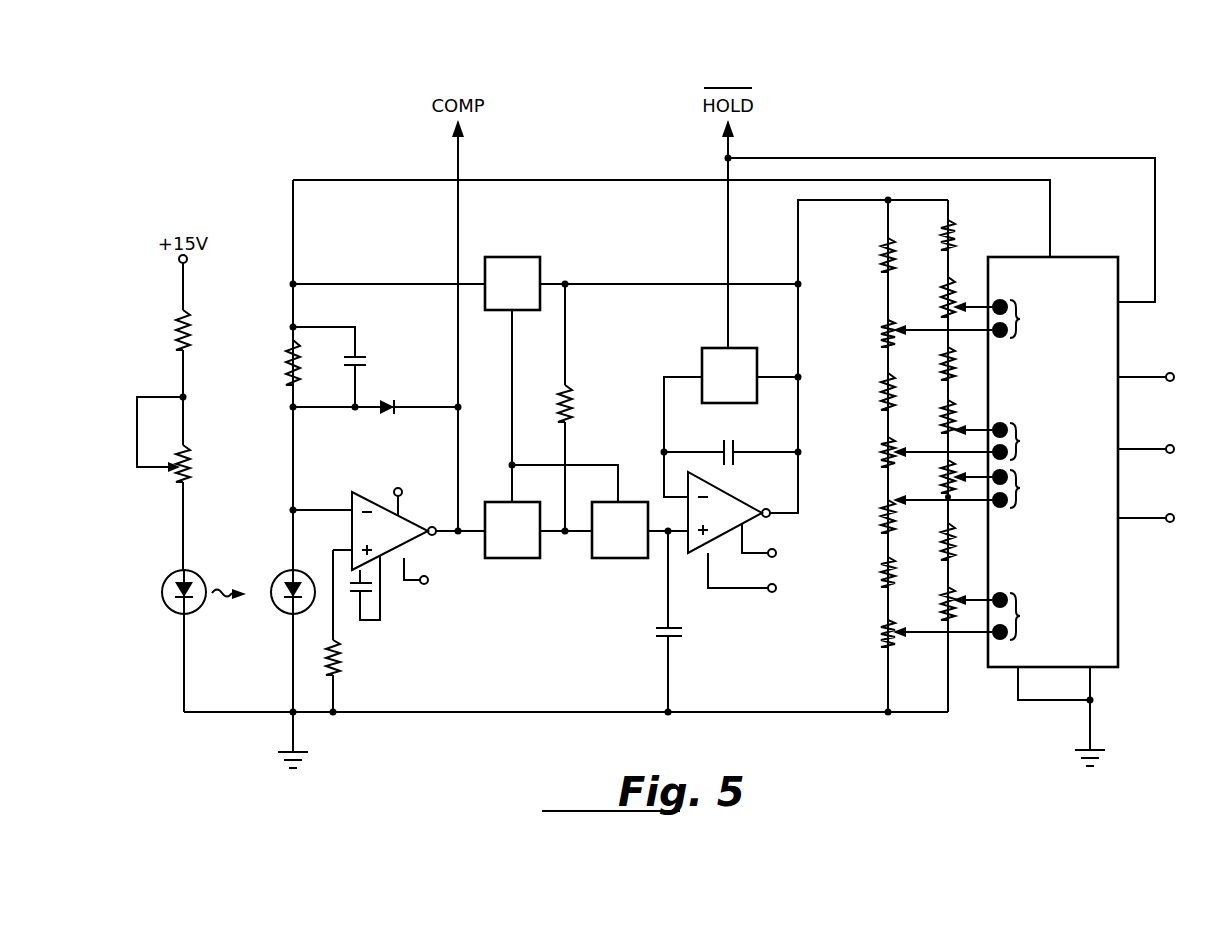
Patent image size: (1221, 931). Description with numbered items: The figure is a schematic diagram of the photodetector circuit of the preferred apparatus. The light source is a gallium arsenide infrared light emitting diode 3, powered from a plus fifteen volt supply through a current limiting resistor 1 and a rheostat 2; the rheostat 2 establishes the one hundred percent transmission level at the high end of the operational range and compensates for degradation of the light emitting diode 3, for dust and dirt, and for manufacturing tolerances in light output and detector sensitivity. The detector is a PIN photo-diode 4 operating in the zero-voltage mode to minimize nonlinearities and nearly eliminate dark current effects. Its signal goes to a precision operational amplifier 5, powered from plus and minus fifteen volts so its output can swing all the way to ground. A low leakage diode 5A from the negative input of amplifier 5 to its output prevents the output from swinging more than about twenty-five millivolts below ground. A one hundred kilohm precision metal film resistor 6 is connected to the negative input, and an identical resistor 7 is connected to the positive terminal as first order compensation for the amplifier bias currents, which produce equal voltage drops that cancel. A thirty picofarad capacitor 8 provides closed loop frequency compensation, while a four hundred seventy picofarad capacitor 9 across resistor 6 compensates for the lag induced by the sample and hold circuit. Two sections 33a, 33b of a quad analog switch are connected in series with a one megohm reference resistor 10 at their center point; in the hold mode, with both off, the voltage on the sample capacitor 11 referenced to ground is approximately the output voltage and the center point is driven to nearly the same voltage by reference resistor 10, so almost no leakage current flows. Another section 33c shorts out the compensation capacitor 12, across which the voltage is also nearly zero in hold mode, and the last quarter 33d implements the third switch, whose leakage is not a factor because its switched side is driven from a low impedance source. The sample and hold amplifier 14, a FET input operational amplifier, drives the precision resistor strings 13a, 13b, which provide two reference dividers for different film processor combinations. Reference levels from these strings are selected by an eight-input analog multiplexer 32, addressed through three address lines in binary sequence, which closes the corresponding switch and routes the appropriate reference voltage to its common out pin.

The current limiting resistor 1 is at (176, 327).
The rheostat 2 is at (186, 468).
The light emitting diode 3 is at (166, 586).
The PIN photo-diode 4 is at (284, 582).
The precision operational amplifier 5 is at (361, 485).
The low leakage diode 5A is at (389, 403).
The precision metal film resistor 6 is at (290, 370).
The resistor 7 is at (344, 661).
The capacitor 8 is at (371, 601).
The capacitor 9 is at (362, 358).
The reference resistor 10 is at (576, 408).
The sample capacitor 11 is at (676, 641).
The compensation capacitor 12 is at (742, 445).
The precision resistor string 13a is at (876, 217).
The precision resistor string 13b is at (945, 663).
The sample and hold amplifier 14 is at (745, 506).
The 8-input analog multiplexer 32 is at (1040, 572).
The analog switch section 33a is at (522, 548).
The analog switch section 33b is at (621, 540).
The analog switch section 33c is at (716, 361).
The analog switch section 33d is at (521, 276).